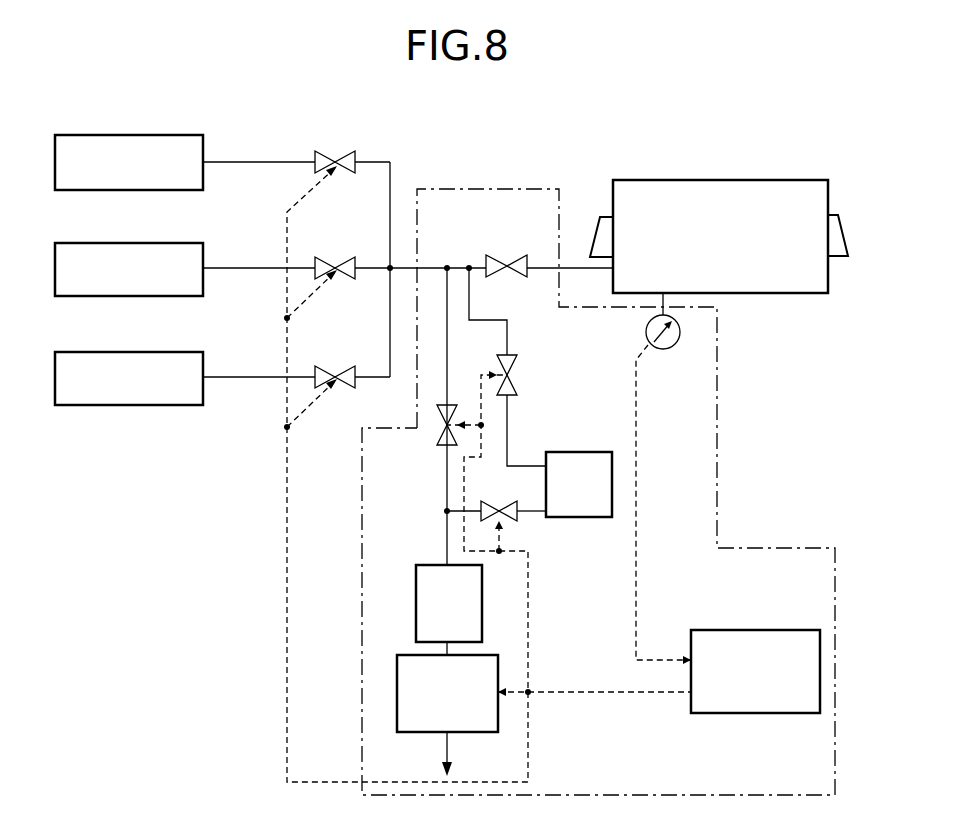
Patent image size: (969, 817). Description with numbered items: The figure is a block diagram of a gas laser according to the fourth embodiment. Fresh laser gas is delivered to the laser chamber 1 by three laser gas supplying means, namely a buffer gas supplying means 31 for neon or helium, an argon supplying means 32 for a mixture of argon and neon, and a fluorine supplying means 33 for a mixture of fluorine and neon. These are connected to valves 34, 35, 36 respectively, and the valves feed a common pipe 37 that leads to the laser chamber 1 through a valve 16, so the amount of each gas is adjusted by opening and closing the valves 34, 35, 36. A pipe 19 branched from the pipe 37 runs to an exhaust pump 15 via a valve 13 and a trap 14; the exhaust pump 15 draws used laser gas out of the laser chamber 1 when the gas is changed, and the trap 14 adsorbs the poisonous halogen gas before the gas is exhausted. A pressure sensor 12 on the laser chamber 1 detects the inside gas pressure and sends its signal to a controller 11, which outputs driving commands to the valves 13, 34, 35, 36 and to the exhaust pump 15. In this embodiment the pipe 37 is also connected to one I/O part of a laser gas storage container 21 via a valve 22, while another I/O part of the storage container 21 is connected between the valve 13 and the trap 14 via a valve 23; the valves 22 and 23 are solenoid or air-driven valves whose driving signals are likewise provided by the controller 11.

The laser chamber 1 is at (700, 180).
The controller 11 is at (755, 630).
The pressure sensor 12 is at (675, 347).
The valve 13 is at (452, 405).
The trap 14 is at (416, 580).
The exhaust pump 15 is at (410, 655).
The valve 16 is at (507, 255).
The pipe 19 is at (445, 300).
The laser gas storage container 21 is at (575, 452).
The valve 22 is at (512, 378).
The valve 23 is at (512, 520).
The buffer gas supplying means 31 is at (100, 135).
The argon supplying means 32 is at (100, 243).
The fluorine supplying means 33 is at (100, 352).
The valve 34 is at (337, 158).
The valve 35 is at (340, 263).
The valve 36 is at (338, 372).
The pipe 37 is at (393, 173).